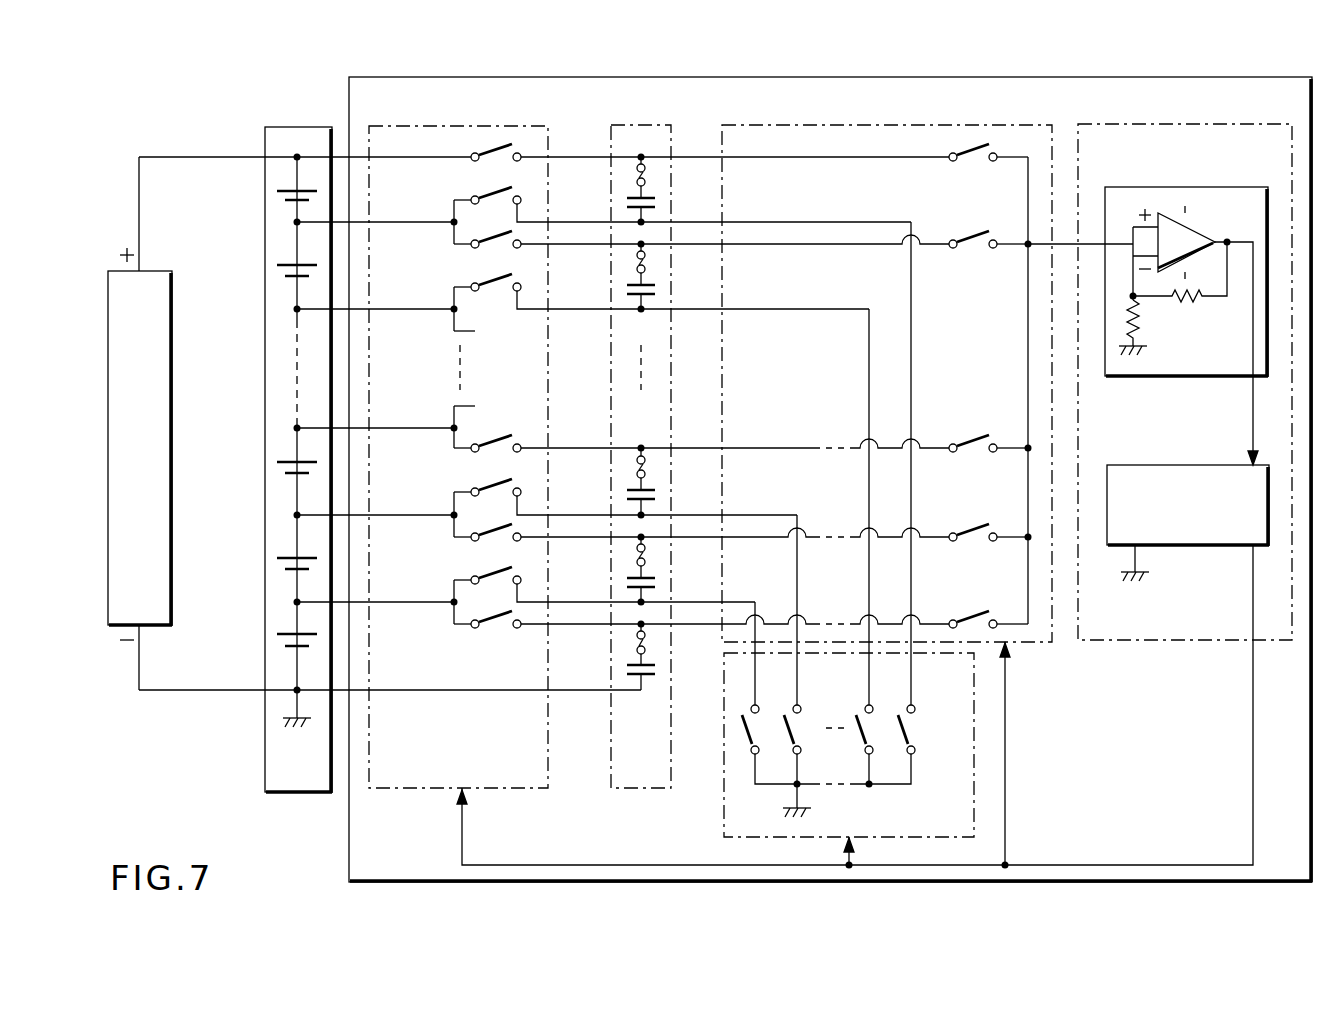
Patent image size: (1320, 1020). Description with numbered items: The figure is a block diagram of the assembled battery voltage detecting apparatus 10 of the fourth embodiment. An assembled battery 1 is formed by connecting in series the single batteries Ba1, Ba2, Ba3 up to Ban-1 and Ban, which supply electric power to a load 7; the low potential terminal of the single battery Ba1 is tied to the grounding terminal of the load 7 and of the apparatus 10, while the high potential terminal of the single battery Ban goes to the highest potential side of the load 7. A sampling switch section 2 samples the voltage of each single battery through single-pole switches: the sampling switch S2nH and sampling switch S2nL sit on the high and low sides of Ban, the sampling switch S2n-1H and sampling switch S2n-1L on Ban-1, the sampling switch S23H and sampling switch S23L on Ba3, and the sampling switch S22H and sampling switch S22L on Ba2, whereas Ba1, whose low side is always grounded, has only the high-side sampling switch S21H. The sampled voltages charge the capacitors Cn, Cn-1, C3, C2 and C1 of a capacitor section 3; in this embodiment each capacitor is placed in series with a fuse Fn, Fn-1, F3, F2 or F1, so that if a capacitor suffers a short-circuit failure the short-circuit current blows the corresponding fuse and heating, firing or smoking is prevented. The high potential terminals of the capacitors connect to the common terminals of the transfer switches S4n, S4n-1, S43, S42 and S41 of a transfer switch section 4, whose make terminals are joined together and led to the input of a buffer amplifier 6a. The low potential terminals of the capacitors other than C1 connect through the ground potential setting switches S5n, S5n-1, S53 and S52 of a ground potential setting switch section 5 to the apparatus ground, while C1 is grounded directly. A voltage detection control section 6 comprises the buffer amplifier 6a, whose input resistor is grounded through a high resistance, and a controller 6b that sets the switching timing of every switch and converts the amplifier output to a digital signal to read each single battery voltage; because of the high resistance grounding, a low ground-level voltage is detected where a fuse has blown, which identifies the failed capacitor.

The assembled battery 1 is at (297, 127).
The sampling switch section 2 is at (472, 126).
The capacitor section 3 is at (643, 125).
The transfer switch section 4 is at (876, 125).
The ground potential setting switch section 5 is at (724, 815).
The voltage detection control section 6 is at (1172, 124).
The buffer amplifier 6a is at (1183, 187).
The controller 6b is at (1180, 465).
The load 7 is at (172, 345).
The assembled battery voltage detecting apparatus 10 is at (912, 77).
The single battery Ban is at (277, 196).
The single battery Ban-1 is at (277, 271).
The single battery Ba3 is at (277, 468).
The single battery Ba2 is at (277, 564).
The single battery Ba1 is at (277, 641).
The sampling switch S2nH is at (480, 152).
The sampling switch S2nL is at (480, 196).
The sampling switch S2n-1H is at (482, 246).
The sampling switch S2n-1L is at (482, 283).
The sampling switch S23H is at (482, 450).
The sampling switch S23L is at (482, 488).
The sampling switch S22H is at (482, 539).
The sampling switch S22L is at (482, 576).
The sampling switch S21H is at (482, 626).
The capacitor Cn is at (627, 190).
The capacitor Cn-1 is at (627, 277).
The capacitor C3 is at (627, 484).
The capacitor C2 is at (627, 571).
The capacitor C1 is at (627, 658).
The fuse Fn is at (646, 180).
The fuse Fn-1 is at (646, 264).
The fuse F3 is at (646, 468).
The fuse F2 is at (646, 556).
The fuse F1 is at (646, 643).
The transfer switch S4n is at (966, 163).
The transfer switch S4n-1 is at (968, 250).
The transfer switch S43 is at (970, 438).
The transfer switch S42 is at (970, 527).
The transfer switch S41 is at (970, 614).
The ground potential setting switch S52 is at (757, 729).
The ground potential setting switch S53 is at (799, 729).
The ground potential setting switch S5n-1 is at (868, 736).
The ground potential setting switch S5n is at (912, 729).